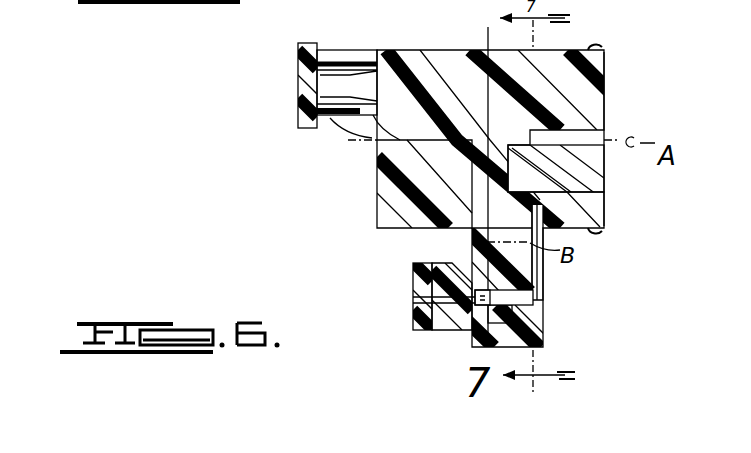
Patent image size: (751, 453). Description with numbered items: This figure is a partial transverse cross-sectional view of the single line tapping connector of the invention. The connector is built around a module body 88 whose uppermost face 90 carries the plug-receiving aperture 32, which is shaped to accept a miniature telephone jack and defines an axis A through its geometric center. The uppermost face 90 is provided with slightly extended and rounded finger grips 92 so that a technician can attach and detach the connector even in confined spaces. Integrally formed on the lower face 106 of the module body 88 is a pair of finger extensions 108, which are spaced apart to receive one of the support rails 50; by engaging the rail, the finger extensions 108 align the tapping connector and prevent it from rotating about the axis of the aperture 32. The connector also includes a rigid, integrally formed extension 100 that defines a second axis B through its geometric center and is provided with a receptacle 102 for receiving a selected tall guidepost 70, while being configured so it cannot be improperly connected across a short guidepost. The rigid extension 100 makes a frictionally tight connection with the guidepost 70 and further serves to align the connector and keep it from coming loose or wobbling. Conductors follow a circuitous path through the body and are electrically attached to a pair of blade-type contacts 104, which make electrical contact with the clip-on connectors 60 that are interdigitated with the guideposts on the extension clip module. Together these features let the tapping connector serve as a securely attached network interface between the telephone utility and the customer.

The plug-receiving aperture 32 is at (606, 132).
The support rails 50 is at (300, 100).
The clip-on connectors 60 is at (413, 280).
The guideposts 70 is at (415, 310).
The module body 88 is at (437, 60).
The uppermost face 90 is at (606, 68).
The finger grips 92 is at (606, 44).
The rigid extension 100 is at (543, 283).
The receptacle 102 is at (471, 348).
The blade-type contacts 104 is at (457, 330).
The lower face 106 is at (377, 193).
The finger extensions 108 is at (350, 55).